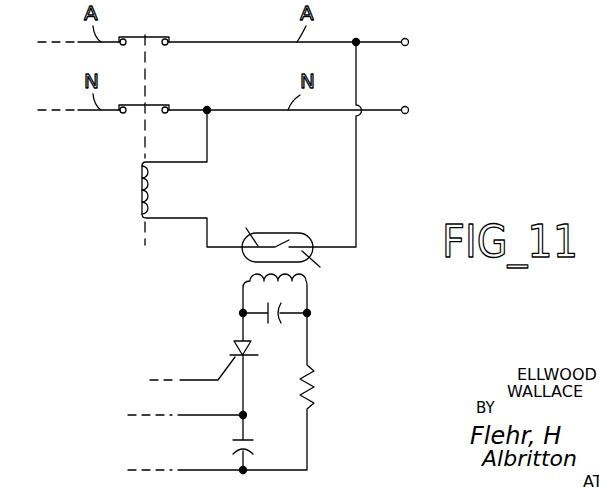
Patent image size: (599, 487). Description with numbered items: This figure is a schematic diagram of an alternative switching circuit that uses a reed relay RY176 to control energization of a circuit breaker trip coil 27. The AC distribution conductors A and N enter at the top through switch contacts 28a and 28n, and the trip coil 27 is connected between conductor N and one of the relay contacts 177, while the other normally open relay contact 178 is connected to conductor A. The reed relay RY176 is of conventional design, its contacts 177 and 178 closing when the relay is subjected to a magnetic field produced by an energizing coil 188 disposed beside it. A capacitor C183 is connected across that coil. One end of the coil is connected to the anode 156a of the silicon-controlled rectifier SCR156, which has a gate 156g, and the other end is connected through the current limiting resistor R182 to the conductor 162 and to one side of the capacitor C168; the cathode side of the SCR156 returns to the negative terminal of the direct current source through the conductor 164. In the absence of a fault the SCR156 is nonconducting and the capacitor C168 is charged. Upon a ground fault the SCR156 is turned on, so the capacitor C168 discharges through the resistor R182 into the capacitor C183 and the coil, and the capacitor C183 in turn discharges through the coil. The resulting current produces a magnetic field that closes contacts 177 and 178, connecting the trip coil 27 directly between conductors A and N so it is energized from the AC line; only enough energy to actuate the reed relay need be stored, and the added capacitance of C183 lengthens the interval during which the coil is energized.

The line A switch contact 28a is at (158, 37).
The line N switch contact 28n is at (158, 105).
The trip coil 27 is at (135, 190).
The reed relay RY176 is at (277, 226).
The reed relay contact 177 is at (235, 227).
The reed relay contact 178 is at (332, 266).
The relay coil 188 is at (243, 283).
The capacitor C183 is at (279, 326).
The silicon-controlled rectifier SCR156 is at (230, 335).
The anode 156a is at (248, 341).
The SCR gate 156g is at (221, 376).
The conductor 164 is at (208, 414).
The capacitor C168 is at (238, 445).
The conductor 162 is at (215, 470).
The current limiting resistor R182 is at (315, 391).